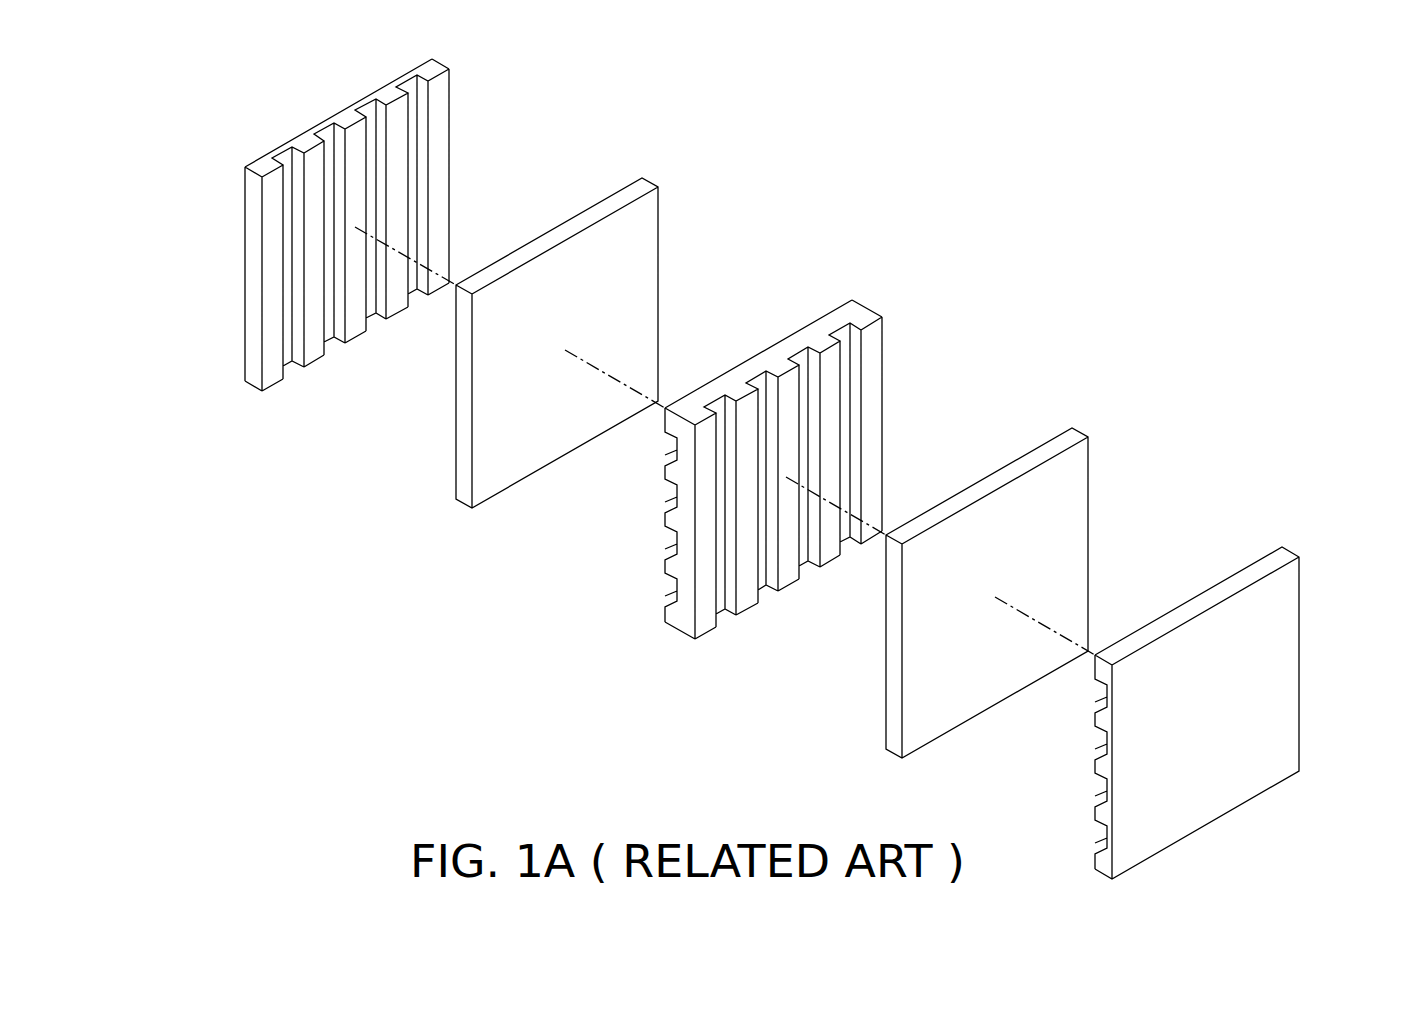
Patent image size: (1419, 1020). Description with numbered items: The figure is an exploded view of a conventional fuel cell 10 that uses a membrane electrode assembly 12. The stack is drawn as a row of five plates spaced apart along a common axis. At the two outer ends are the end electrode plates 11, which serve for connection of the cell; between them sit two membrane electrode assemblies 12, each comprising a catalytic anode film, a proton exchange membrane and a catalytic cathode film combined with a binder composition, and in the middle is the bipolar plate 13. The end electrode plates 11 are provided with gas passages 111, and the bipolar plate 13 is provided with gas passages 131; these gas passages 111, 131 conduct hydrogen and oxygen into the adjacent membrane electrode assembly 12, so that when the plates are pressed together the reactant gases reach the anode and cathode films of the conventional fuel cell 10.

The conventional fuel cell 10 is at (153, 89).
The end electrode plate 11 is at (432, 71).
The gas passages 111 is at (1093, 792).
The membrane electrode assembly 12 is at (462, 492).
The bipolar plate 13 is at (862, 313).
The gas passages 131 is at (843, 337).